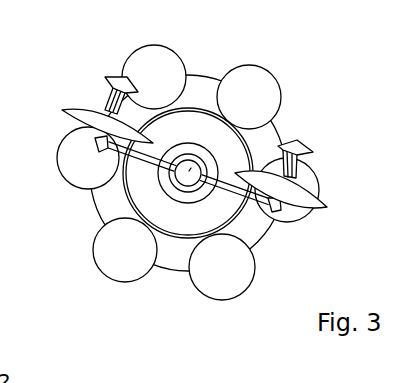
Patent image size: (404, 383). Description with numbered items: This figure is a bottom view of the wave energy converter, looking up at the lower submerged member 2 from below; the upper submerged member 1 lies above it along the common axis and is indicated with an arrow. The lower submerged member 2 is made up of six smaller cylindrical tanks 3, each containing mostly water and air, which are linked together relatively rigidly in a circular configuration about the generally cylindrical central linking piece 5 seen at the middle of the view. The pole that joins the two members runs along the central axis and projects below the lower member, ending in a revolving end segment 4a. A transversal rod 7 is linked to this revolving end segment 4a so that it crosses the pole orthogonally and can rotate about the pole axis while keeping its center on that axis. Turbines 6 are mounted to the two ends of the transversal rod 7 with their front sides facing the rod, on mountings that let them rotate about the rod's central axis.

The upper submerged member 1 is at (97, 214).
The lower submerged member 2 is at (242, 302).
The cylindrical tanks 3 is at (244, 77).
The revolving end segment 4a is at (221, 158).
The central linking piece 5 is at (123, 196).
The turbines 6 is at (99, 112).
The transversal rod 7 is at (263, 227).